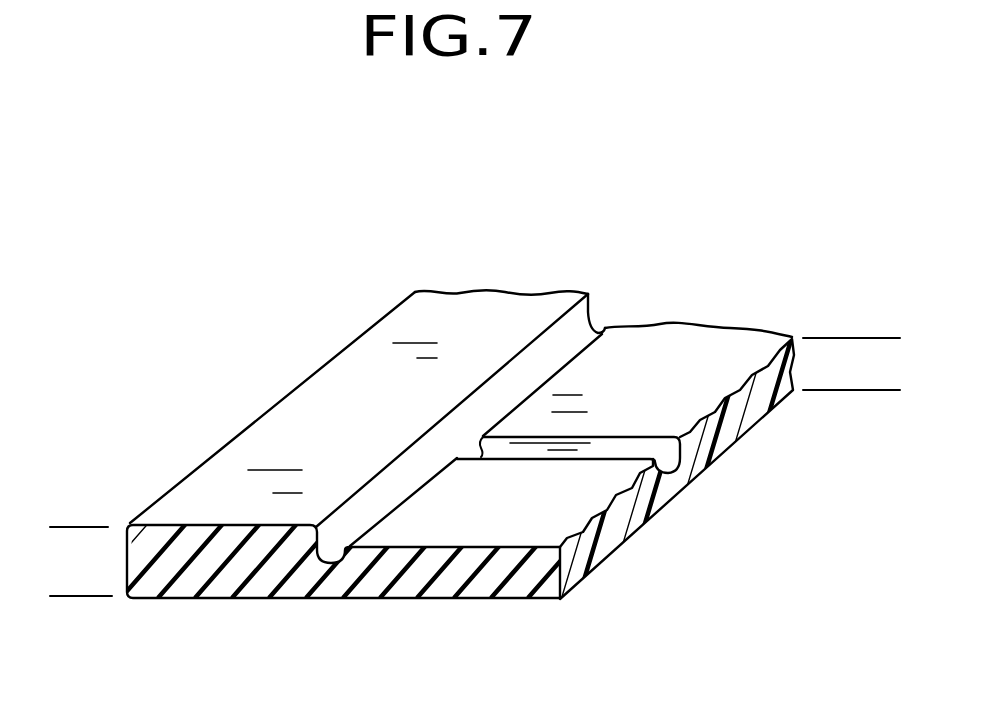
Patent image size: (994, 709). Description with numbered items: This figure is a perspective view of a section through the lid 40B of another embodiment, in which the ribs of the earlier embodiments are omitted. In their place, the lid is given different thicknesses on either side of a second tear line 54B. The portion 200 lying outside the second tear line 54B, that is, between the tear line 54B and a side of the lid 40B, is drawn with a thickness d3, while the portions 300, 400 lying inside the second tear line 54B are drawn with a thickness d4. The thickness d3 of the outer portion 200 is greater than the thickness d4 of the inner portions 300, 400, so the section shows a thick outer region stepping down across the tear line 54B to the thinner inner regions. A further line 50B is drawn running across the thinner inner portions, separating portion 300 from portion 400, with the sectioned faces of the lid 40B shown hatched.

The portion outside second tear line 200 is at (338, 416).
The portion inside second tear lines 300 is at (730, 352).
The portion inside second tear lines 400 is at (488, 518).
The lid 40B is at (548, 265).
The transverse groove 50B is at (607, 447).
The second tear line 54B is at (577, 345).
The thickness of portions outside second tear lines d3 is at (72, 487).
The thickness of portions inside second tear lines d4 is at (879, 290).